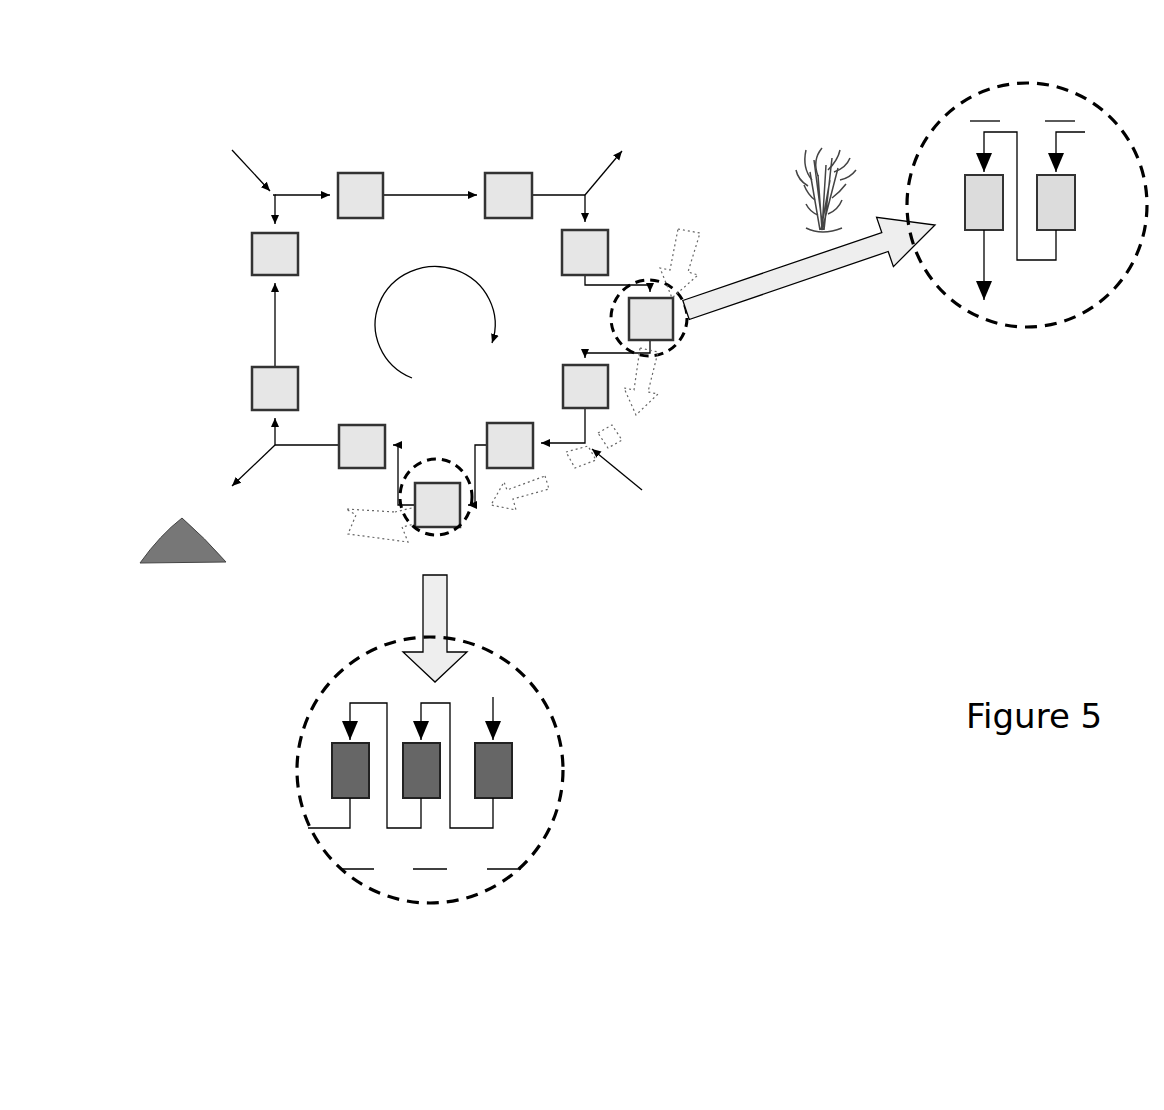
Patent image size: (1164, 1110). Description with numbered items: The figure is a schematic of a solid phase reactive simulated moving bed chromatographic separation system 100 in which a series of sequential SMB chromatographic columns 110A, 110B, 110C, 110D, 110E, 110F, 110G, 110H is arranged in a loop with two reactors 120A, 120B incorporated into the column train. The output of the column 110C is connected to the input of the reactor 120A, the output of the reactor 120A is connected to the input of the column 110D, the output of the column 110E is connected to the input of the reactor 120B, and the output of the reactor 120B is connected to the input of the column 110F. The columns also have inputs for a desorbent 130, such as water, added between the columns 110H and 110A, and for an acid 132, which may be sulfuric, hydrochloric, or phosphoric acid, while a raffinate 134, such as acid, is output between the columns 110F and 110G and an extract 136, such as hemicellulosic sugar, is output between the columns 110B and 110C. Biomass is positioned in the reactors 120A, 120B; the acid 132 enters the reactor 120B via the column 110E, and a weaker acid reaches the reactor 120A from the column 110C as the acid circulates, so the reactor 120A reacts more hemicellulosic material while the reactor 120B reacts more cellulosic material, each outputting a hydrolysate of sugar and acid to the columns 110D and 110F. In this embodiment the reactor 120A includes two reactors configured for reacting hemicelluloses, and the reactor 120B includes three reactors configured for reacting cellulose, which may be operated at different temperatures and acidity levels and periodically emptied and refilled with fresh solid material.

The solid phase reactive separation system 100 is at (537, 76).
The SMB chromatographic column 110A is at (364, 168).
The SMB chromatographic column 110B is at (493, 180).
The SMB chromatographic column 110C is at (591, 245).
The SMB chromatographic column 110D is at (613, 394).
The SMB chromatographic column 110E is at (348, 442).
The SMB chromatographic column 110F is at (531, 452).
The SMB chromatographic column 110G is at (268, 378).
The SMB chromatographic column 110H is at (268, 243).
The reactor 120A is at (676, 294).
The reactor 120B is at (452, 510).
The desorbent 130 is at (165, 525).
The acid 132 is at (184, 125).
The raffinate 134 is at (714, 532).
The extract 136 is at (727, 108).